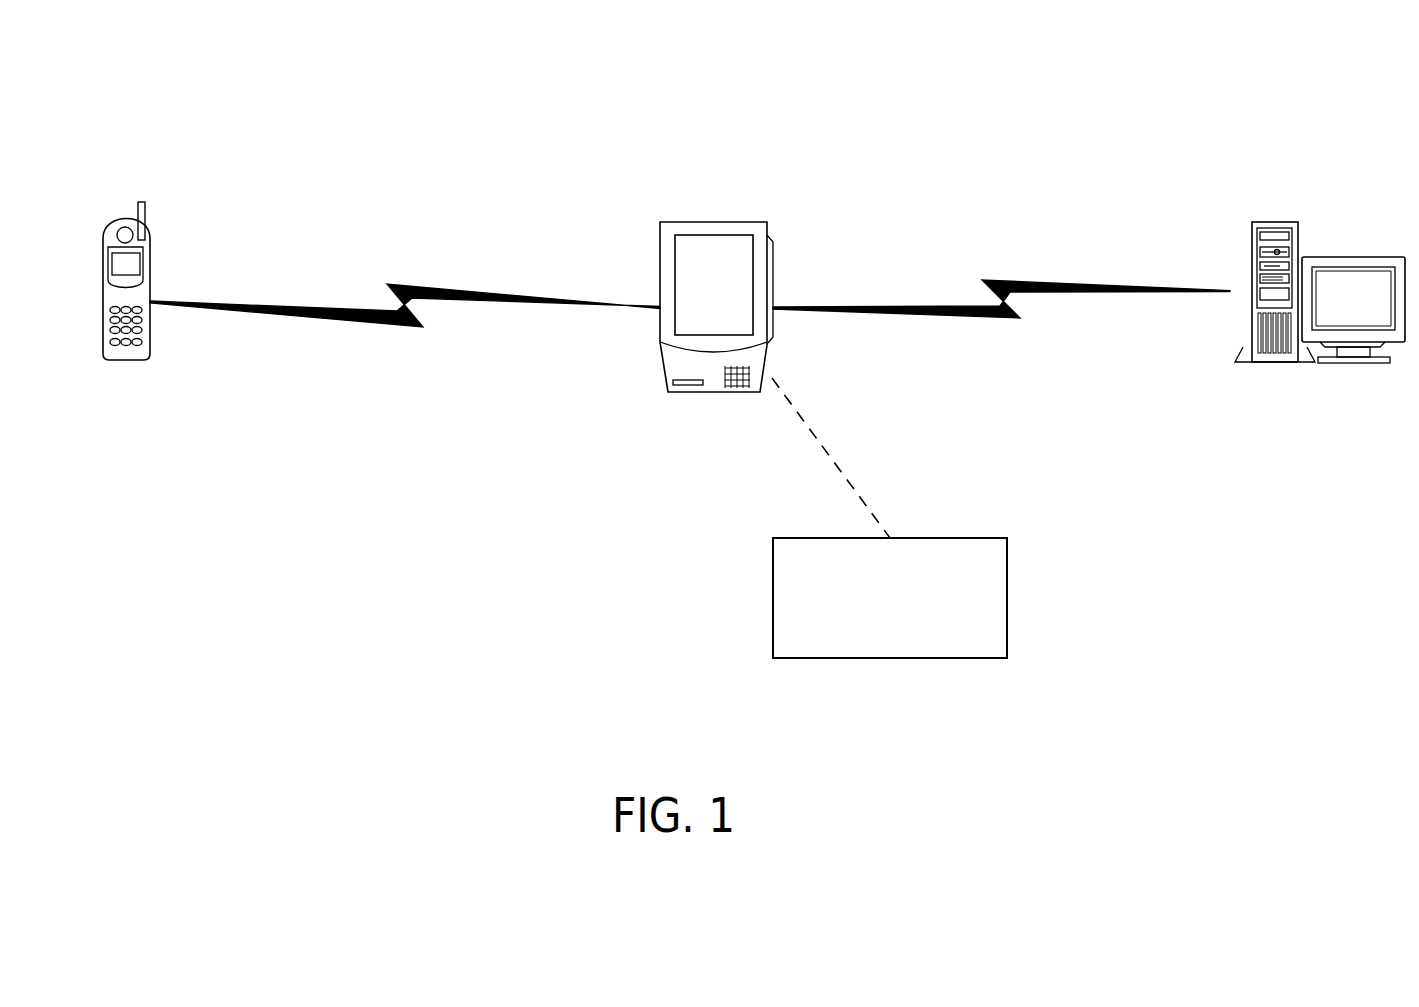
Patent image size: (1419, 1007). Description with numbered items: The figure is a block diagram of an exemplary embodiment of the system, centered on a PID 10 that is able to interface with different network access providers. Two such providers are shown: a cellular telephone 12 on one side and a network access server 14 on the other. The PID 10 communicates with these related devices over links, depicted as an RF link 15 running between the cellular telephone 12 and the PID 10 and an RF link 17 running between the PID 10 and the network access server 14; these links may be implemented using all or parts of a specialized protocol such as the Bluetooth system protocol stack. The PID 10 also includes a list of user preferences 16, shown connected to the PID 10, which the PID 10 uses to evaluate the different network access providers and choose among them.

The PID 10 is at (717, 222).
The cellular telephone 12 is at (140, 198).
The network access server 14 is at (1270, 222).
The RF link 15 is at (297, 308).
The list of user preferences 16 is at (1007, 588).
The RF link 17 is at (997, 280).